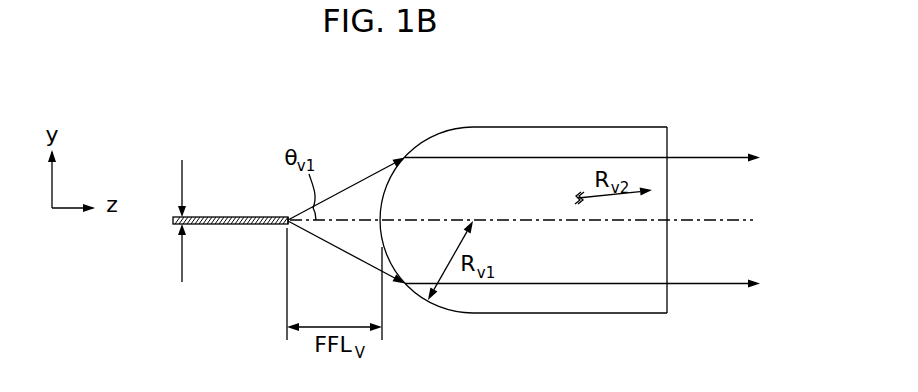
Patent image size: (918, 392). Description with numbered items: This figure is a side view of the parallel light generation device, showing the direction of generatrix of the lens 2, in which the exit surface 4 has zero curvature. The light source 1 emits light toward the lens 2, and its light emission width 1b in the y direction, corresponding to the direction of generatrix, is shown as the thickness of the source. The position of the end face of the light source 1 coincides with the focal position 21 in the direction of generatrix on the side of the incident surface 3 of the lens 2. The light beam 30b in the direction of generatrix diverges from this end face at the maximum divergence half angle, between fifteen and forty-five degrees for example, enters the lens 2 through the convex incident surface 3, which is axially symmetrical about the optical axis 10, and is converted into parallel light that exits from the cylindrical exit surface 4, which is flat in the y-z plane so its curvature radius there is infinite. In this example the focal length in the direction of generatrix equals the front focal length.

The light source 1 is at (233, 217).
The light emission width in the y direction 1b is at (166, 219).
The lens 2 is at (533, 127).
The incident surface 3 is at (412, 152).
The exit surface 4 is at (667, 177).
The optical axis 10 is at (753, 220).
The focal position 21 is at (287, 224).
The light beam 30b is at (358, 181).